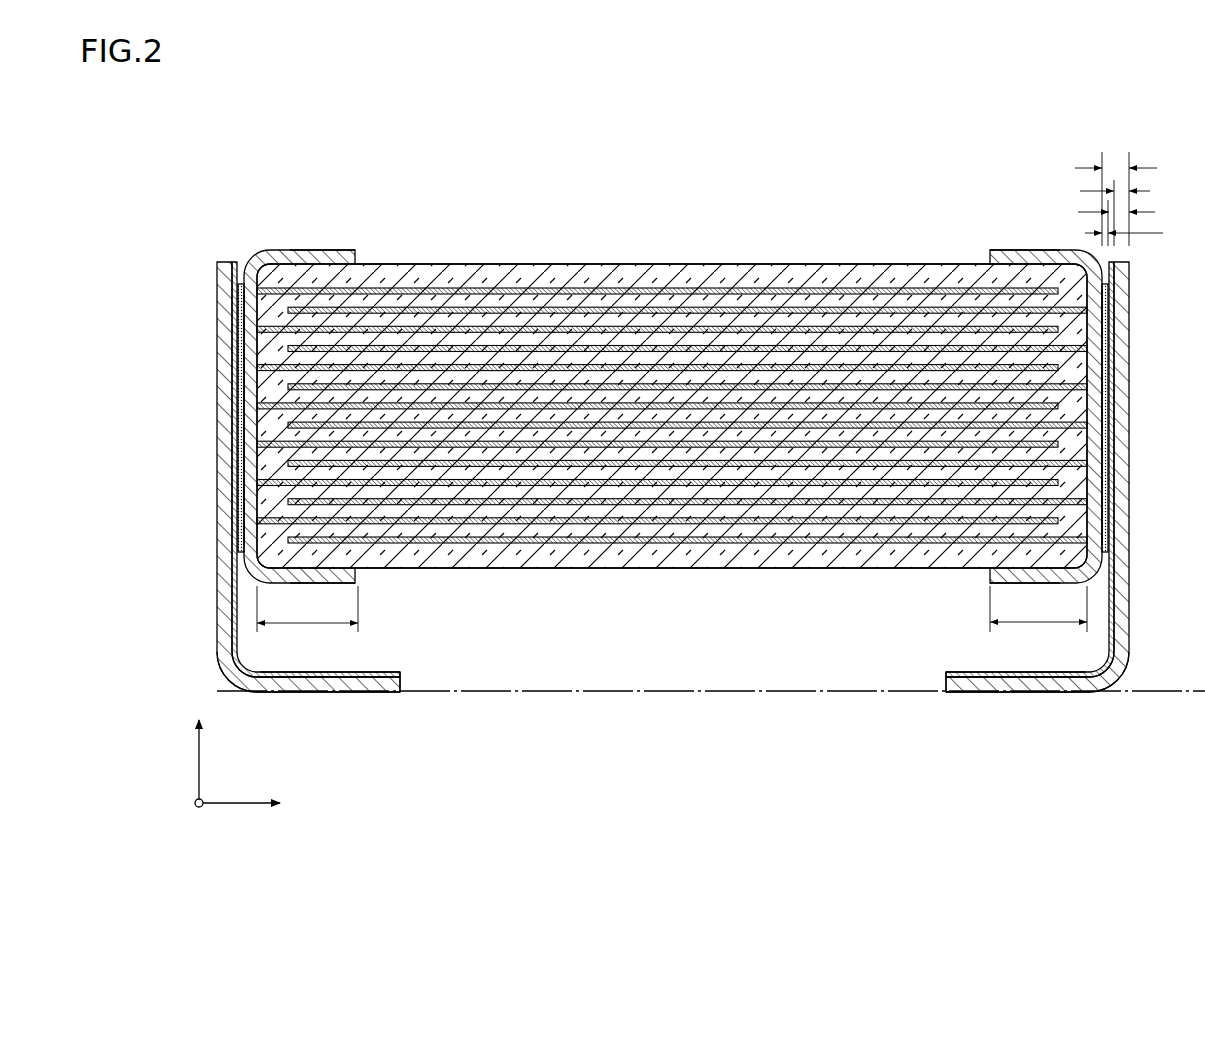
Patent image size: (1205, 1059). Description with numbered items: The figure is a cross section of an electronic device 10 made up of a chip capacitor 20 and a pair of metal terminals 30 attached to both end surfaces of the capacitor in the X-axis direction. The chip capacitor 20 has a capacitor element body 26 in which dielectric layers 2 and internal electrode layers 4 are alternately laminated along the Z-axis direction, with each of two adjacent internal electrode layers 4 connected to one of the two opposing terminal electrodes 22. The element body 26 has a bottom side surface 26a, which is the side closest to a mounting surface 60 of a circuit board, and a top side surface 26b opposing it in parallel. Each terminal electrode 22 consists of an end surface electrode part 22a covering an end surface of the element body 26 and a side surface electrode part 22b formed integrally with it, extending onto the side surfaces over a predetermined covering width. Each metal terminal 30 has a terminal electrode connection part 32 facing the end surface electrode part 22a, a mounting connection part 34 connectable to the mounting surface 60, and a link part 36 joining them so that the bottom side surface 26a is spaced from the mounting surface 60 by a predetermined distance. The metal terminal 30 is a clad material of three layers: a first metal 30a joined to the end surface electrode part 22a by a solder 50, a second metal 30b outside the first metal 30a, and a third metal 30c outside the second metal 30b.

The dielectric layer 2 is at (582, 313).
The internal electrode layer 4 is at (666, 306).
The electronic device 10 is at (738, 243).
The chip capacitor 20 is at (811, 263).
The terminal electrode 22 is at (300, 247).
The end surface electrode part 22a is at (248, 335).
The side surface electrode part 22b is at (325, 250).
The capacitor element body 26 is at (897, 264).
The bottom side surface 26a is at (535, 570).
The top side surface 26b is at (437, 264).
The metal terminal 30 is at (217, 521).
The first metal 30a is at (284, 673).
The second metal 30b is at (401, 686).
The third metal 30c is at (375, 693).
The terminal electrode connection part 32 is at (235, 435).
The mounting connection part 34 is at (360, 673).
The link part 36 is at (224, 620).
The solder 50 is at (241, 290).
The mounting surface 60 is at (672, 690).